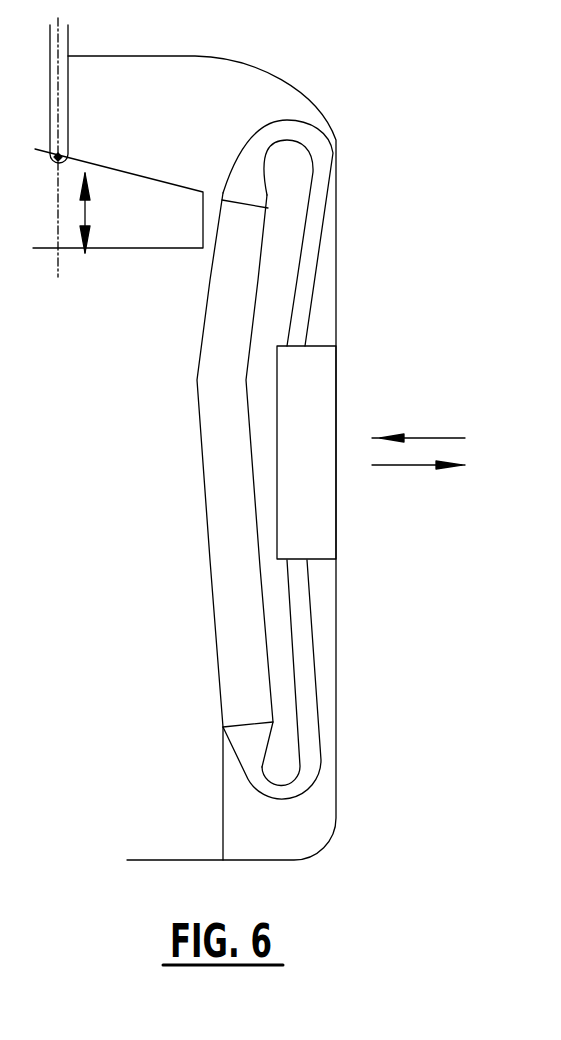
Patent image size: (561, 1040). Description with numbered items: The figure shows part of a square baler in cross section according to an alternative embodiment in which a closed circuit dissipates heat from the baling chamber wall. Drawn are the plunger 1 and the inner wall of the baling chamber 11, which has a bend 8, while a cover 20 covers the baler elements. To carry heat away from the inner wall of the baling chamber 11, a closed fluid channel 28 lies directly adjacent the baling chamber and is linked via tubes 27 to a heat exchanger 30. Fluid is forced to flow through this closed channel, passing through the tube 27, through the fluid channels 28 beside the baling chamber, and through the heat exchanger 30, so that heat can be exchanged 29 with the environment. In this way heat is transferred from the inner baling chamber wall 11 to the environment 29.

The plunger 1 is at (118, 201).
The bend 8 is at (195, 381).
The inner wall of the baling chamber 11 is at (210, 555).
The cover 20 is at (307, 105).
The tubes 27 is at (313, 205).
The closed fluid channel 28 is at (222, 448).
The heat exchange with the environment 29 is at (436, 452).
The heat exchanger 30 is at (312, 388).